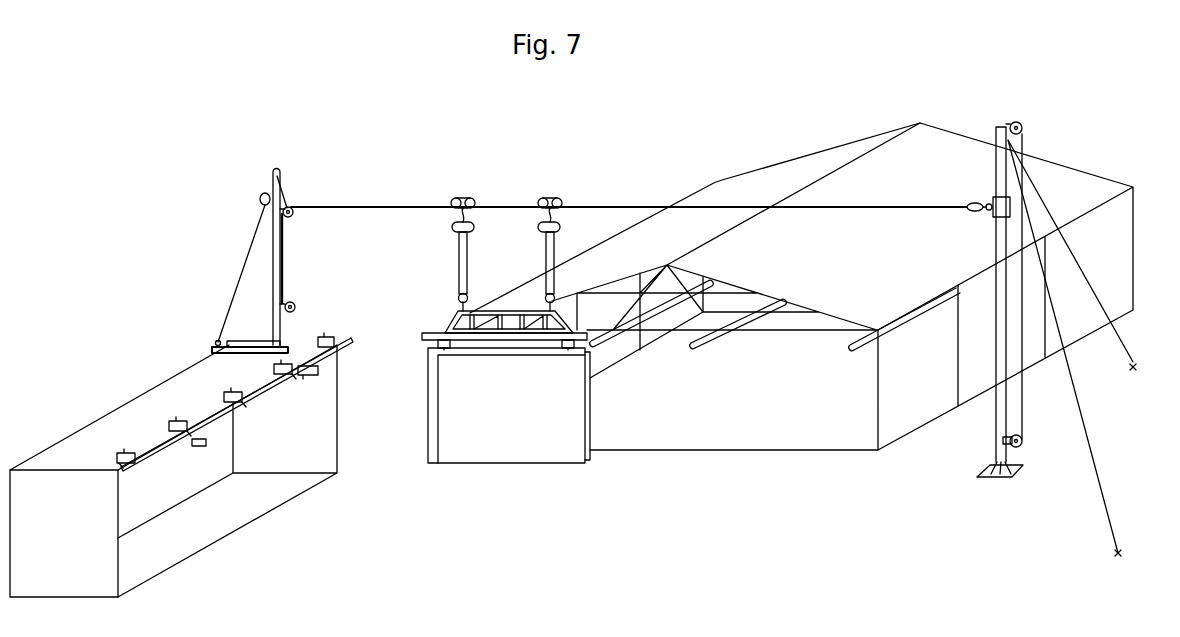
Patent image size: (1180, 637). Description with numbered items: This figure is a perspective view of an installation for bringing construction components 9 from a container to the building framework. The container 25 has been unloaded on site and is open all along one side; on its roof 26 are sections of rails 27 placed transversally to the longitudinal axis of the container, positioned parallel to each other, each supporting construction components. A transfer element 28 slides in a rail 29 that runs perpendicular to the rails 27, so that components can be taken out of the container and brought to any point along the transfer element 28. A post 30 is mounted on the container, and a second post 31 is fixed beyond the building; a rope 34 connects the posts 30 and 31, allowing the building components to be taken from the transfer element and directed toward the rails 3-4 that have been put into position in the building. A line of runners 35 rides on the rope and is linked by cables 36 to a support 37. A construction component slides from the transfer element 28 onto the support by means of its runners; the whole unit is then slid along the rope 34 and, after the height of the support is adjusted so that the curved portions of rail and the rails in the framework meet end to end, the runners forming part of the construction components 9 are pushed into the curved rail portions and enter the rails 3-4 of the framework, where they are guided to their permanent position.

The rails 3-4 is at (612, 350).
The construction components 9 is at (524, 436).
The container 25 is at (172, 540).
The roof 26 is at (160, 403).
The sections of rails 27 is at (200, 432).
The transfer element 28 is at (312, 381).
The rail 29 is at (346, 329).
The post 30 is at (270, 258).
The second post 31 is at (1002, 465).
The rope 34 is at (824, 205).
The runners 35 is at (470, 196).
The cables 36 is at (452, 257).
The support 37 is at (440, 352).